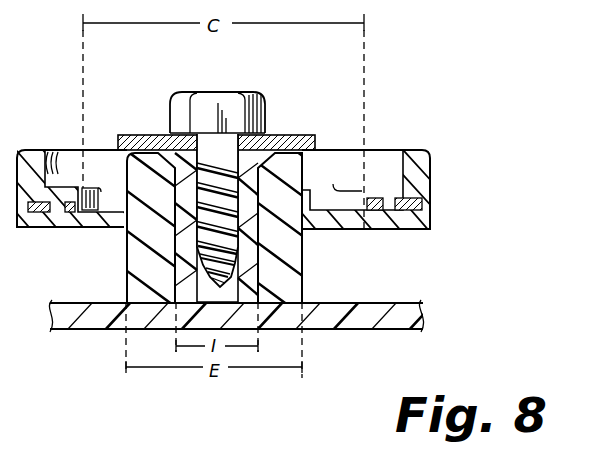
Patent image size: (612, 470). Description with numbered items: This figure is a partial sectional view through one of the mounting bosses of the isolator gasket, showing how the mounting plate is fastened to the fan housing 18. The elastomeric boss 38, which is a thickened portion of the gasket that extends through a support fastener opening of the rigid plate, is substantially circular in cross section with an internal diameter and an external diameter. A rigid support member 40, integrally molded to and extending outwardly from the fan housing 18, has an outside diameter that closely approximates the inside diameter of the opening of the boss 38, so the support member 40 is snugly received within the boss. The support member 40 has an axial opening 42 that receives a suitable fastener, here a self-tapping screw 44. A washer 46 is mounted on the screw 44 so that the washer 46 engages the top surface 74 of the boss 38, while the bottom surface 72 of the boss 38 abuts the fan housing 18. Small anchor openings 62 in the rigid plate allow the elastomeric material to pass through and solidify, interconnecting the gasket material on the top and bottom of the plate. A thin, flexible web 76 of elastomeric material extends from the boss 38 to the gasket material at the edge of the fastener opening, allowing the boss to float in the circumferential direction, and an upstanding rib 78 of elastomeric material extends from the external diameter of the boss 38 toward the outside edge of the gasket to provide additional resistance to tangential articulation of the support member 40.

The fan housing 18 is at (107, 330).
The boss 38 is at (306, 270).
The rigid support member 40 is at (255, 183).
The axial opening 42 is at (206, 279).
The self-tapping screw 44 is at (238, 92).
The washer 46 is at (293, 136).
The anchor opening 62 is at (383, 205).
The bottom surface of the boss 72 is at (313, 329).
The top surface of the boss 74 is at (152, 134).
The flexible web 76 is at (112, 228).
The upstanding rib 78 is at (388, 154).